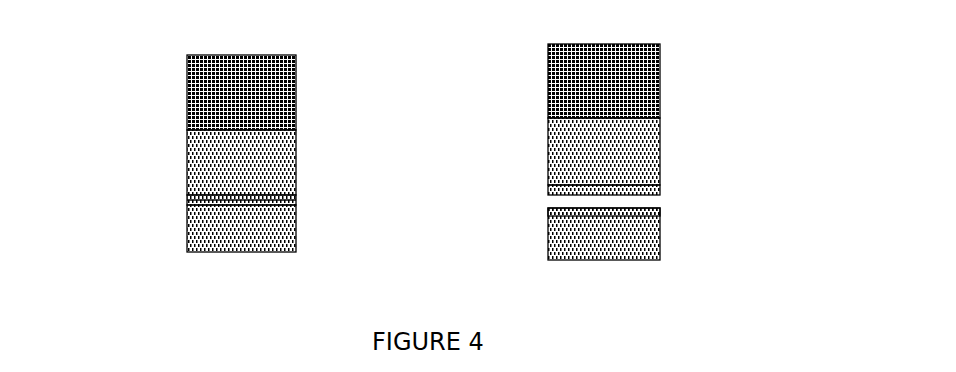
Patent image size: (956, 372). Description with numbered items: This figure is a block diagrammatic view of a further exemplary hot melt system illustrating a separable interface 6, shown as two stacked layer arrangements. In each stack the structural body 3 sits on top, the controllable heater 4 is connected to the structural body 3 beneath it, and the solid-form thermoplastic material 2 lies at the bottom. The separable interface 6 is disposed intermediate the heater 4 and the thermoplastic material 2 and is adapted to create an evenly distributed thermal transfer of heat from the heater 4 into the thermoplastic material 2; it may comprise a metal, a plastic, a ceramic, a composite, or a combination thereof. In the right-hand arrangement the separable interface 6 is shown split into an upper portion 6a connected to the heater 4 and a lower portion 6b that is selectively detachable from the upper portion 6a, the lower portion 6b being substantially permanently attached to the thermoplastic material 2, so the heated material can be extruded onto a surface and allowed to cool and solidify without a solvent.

The thermoplastic material 2 is at (187, 228).
The structural body 3 is at (187, 95).
The controllable heater 4 is at (187, 168).
The separable interface 6 is at (472, 217).
The upper portion 6a is at (548, 190).
The lower portion 6b is at (560, 214).